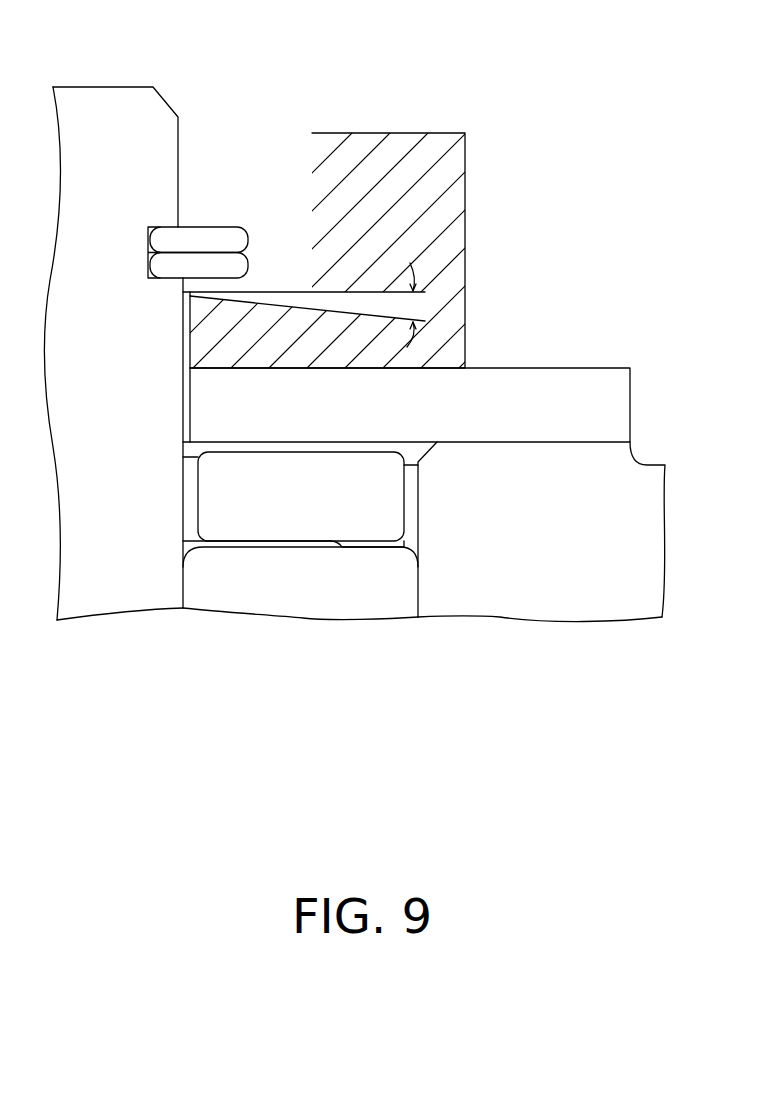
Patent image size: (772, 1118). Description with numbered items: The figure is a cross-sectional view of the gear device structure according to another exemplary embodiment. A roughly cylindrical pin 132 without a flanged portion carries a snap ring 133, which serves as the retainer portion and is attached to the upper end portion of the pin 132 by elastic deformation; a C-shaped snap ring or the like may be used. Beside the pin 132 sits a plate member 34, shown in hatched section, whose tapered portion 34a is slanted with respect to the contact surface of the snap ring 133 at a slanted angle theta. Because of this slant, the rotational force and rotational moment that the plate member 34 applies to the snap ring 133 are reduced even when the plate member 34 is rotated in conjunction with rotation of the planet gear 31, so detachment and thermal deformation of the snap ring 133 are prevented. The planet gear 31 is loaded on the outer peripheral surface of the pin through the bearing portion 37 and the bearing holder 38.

The planet gear 31 is at (538, 607).
The plate member 34 is at (423, 152).
The tapered portion 34a is at (275, 305).
The bearing portion 37 is at (290, 593).
The bearing holder 38 is at (360, 513).
The pin 132 is at (115, 602).
The snap ring 133 is at (215, 240).